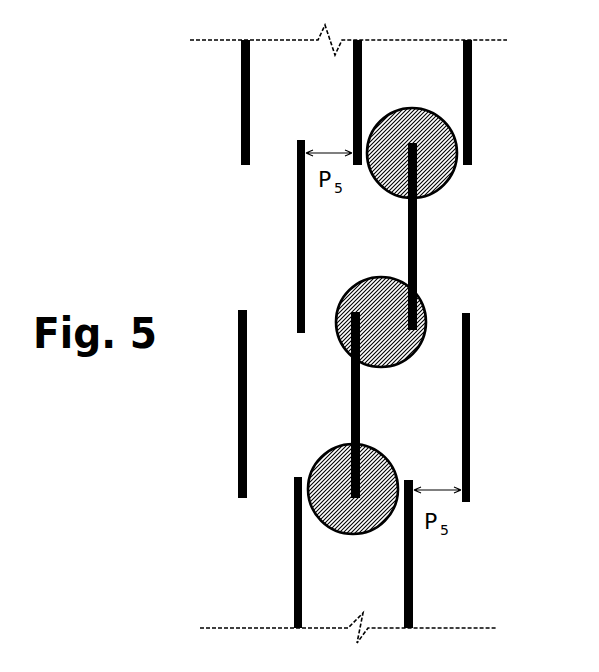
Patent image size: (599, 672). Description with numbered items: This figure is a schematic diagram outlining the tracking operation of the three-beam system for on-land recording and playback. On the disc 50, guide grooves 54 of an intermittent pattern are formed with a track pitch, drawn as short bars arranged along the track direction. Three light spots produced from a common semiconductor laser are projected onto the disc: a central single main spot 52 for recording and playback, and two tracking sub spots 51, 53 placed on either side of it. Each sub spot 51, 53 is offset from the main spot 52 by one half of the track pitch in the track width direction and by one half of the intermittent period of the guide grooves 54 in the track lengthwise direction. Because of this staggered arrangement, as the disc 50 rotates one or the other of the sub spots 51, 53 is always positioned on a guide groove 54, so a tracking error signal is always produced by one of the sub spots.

The disc 50 is at (238, 39).
The sub spot 51 is at (427, 178).
The main spot 52 is at (353, 292).
The sub spot 53 is at (323, 452).
The guide grooves 54 is at (250, 103).